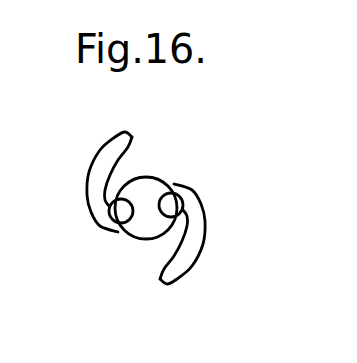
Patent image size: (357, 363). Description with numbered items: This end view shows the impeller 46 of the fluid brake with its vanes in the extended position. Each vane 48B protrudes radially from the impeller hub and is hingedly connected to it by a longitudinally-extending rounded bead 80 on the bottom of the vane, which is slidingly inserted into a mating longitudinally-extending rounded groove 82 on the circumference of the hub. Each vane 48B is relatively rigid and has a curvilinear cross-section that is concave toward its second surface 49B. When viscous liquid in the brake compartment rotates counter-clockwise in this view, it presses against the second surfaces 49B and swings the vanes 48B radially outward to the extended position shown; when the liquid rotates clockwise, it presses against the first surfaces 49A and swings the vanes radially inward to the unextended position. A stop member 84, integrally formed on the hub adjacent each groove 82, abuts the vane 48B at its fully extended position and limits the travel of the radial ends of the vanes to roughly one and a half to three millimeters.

The impeller 46 is at (137, 172).
The vane 48B is at (207, 238).
The first surface 49A is at (104, 145).
The second surface 49B is at (134, 140).
The rounded bead 80 is at (111, 222).
The rounded groove 82 is at (153, 178).
The stop member 84 is at (184, 193).